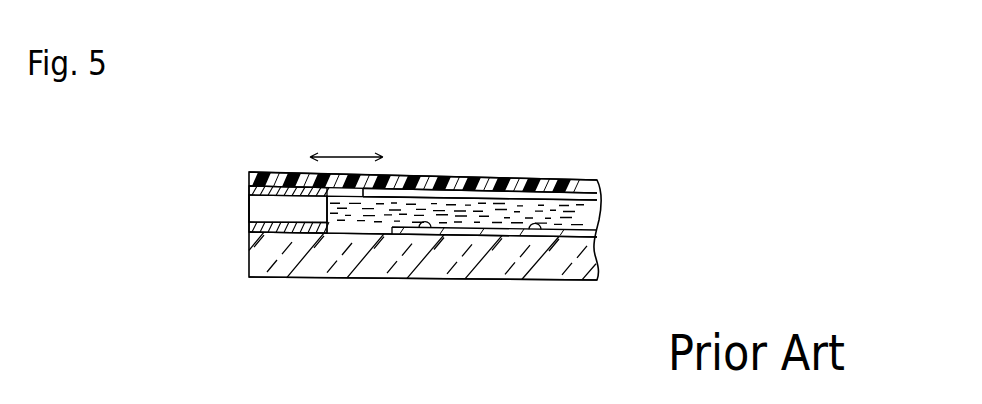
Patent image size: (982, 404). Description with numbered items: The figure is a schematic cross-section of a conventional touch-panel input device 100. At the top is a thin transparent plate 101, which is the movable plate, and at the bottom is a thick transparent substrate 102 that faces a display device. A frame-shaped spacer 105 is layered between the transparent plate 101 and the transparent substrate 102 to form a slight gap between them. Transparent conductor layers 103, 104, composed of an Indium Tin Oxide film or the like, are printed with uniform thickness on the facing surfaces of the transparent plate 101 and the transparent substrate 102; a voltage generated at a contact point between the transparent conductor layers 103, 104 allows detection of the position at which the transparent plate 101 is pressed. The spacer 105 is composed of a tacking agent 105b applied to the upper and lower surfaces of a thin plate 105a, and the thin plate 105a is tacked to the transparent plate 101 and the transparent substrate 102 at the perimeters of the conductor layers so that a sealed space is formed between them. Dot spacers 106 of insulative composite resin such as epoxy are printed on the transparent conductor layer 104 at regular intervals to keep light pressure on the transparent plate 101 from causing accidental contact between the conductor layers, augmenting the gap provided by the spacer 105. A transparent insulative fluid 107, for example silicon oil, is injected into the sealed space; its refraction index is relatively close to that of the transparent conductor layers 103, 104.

The touch-panel input device 100 is at (389, 125).
The transparent plate 101 is at (447, 176).
The transparent substrate 102 is at (548, 262).
The transparent conductor layer 103 is at (530, 195).
The transparent conductor layer 104 is at (490, 234).
The spacer 105 is at (131, 177).
The thin plate 105a is at (249, 209).
The tacking agent 105b is at (249, 188).
The dot spacer 106 is at (433, 233).
The transparent insulative fluid 107 is at (598, 212).